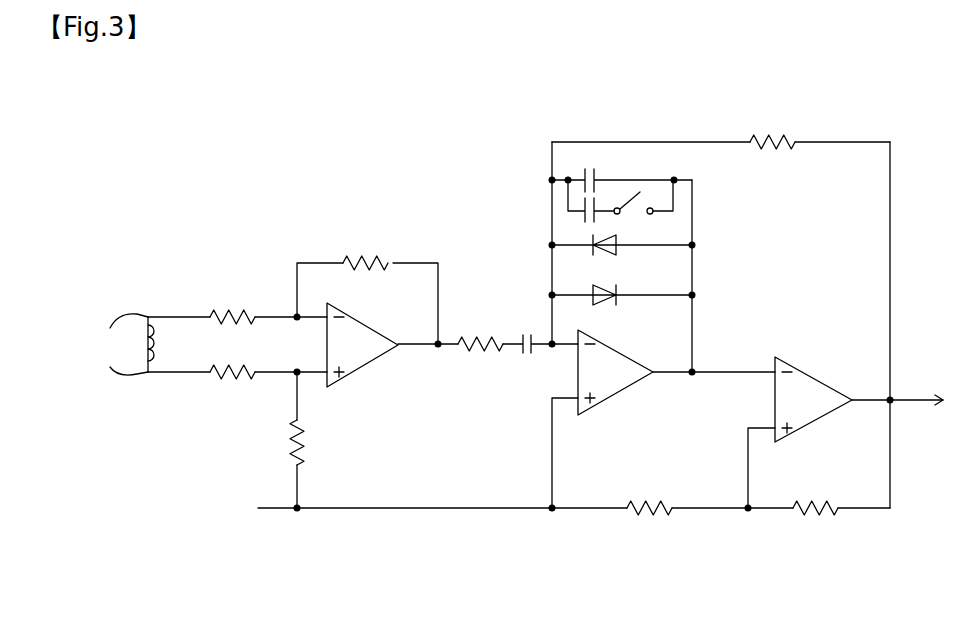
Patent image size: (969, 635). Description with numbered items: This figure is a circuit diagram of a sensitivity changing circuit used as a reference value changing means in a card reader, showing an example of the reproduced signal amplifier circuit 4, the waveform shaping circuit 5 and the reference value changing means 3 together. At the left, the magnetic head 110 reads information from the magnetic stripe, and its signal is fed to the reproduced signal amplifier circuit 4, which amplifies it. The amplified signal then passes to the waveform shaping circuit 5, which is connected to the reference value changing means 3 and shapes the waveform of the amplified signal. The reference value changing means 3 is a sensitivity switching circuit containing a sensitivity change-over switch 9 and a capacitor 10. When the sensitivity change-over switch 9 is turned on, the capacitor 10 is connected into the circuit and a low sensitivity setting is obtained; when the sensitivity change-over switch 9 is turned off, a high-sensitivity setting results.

The reference value changing means 3 is at (678, 253).
The reproduced signal amplifier circuit 4 is at (383, 520).
The waveform shaping circuit 5 is at (605, 520).
The sensitivity change-over switch 9 is at (653, 214).
The capacitor 10 is at (582, 218).
The magnetic head 110 is at (150, 306).